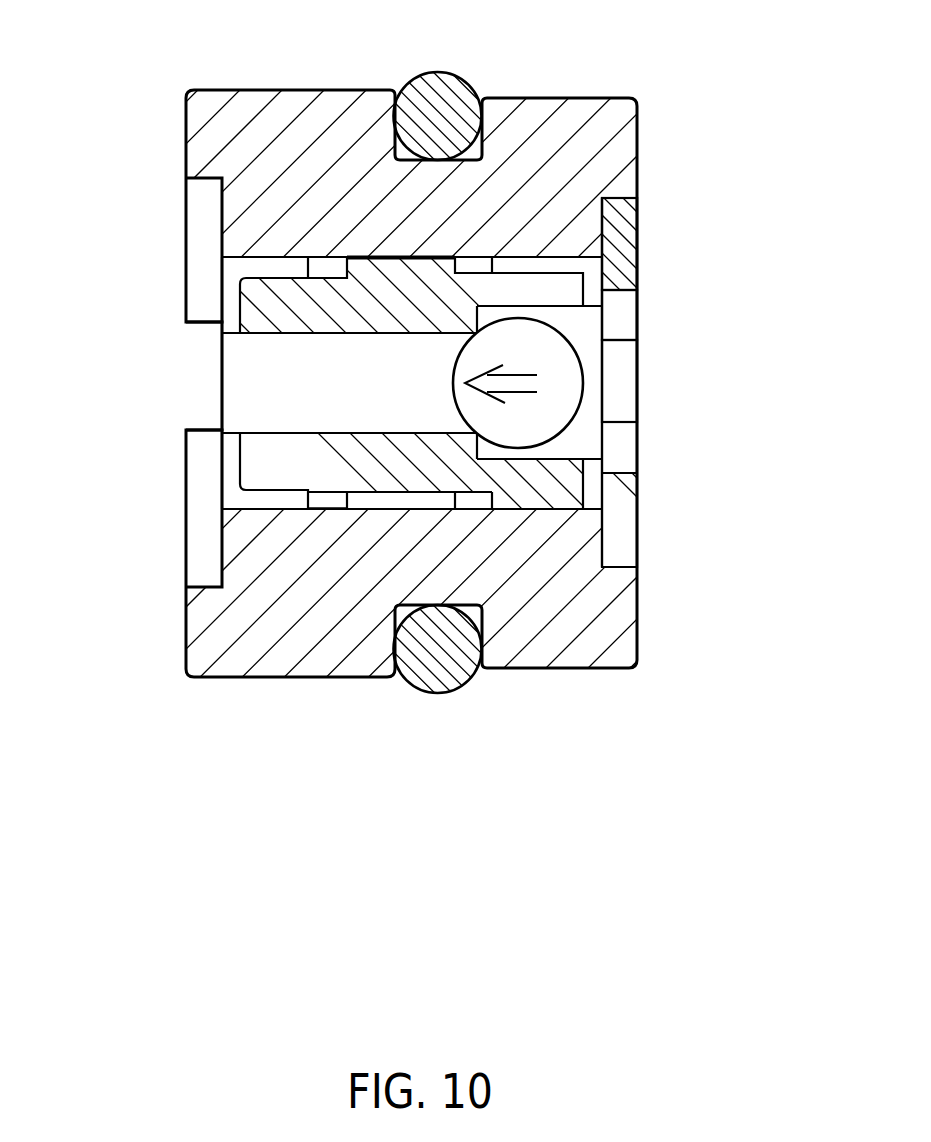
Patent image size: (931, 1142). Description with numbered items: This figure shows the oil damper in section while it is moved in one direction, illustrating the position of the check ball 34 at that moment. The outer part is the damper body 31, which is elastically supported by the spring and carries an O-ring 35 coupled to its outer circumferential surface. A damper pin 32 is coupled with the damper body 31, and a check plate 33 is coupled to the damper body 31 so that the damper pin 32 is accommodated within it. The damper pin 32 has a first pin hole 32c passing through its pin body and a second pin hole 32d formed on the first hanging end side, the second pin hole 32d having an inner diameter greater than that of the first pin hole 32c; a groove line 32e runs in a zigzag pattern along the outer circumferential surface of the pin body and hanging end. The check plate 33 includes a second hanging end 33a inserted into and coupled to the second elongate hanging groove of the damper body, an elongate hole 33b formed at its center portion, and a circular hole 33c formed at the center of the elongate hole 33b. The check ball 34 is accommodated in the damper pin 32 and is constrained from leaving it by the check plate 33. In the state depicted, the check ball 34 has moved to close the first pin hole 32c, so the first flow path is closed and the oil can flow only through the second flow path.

The damper body 31 is at (292, 645).
The damper pin 32 is at (296, 305).
The first pin hole 32c is at (288, 387).
The second pin hole 32d is at (556, 455).
The groove line 32e is at (404, 496).
The check plate 33 is at (662, 220).
The second hanging end 33a is at (618, 262).
The elongate hole 33b is at (622, 322).
The circular hole 33c is at (620, 382).
The check ball 34 is at (524, 328).
The O-ring 35 is at (437, 680).